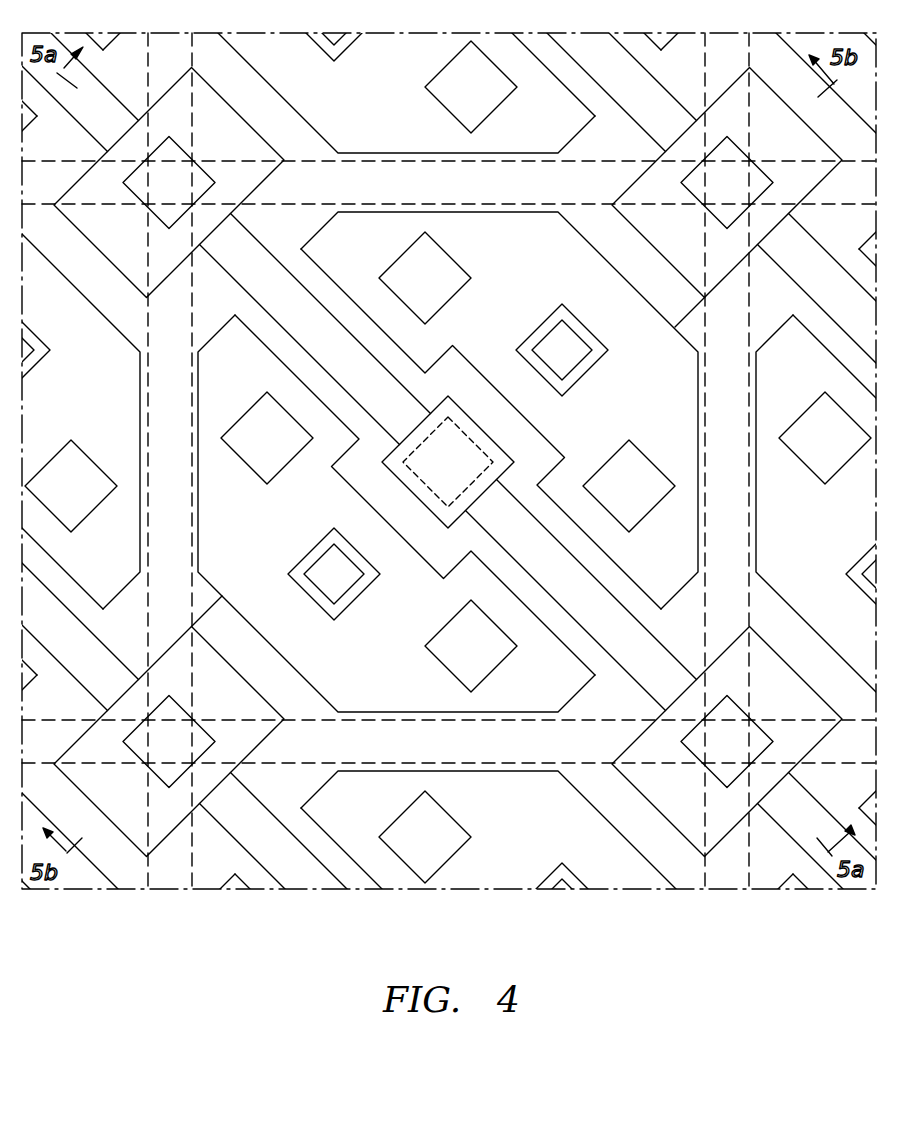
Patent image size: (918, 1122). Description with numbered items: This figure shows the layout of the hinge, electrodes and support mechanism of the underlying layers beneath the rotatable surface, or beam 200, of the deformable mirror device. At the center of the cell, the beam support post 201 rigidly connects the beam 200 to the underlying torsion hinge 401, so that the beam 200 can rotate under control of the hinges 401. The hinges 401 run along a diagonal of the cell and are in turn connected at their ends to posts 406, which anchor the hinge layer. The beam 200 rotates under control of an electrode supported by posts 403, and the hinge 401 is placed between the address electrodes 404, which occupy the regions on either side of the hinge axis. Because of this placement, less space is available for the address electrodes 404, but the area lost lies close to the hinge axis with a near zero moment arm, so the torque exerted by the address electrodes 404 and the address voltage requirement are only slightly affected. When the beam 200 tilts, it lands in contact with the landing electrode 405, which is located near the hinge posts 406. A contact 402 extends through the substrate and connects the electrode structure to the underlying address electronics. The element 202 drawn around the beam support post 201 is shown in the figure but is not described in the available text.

The beam 200 is at (590, 214).
The beam support post 201 is at (467, 474).
The mirror support post spacer 202 is at (506, 454).
The torsion hinge 401 is at (253, 243).
The contact 402 is at (343, 589).
The posts 403 is at (286, 450).
The address electrodes 404 is at (675, 328).
The landing electrode 405 is at (262, 173).
The posts 406 is at (186, 195).